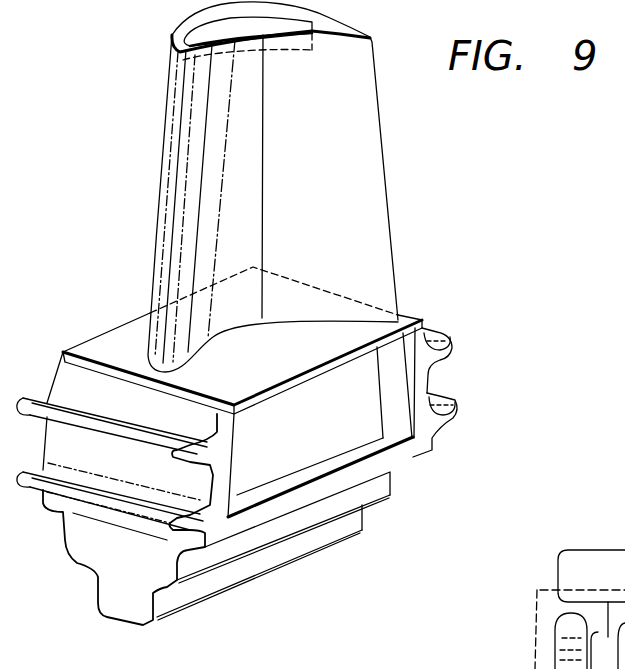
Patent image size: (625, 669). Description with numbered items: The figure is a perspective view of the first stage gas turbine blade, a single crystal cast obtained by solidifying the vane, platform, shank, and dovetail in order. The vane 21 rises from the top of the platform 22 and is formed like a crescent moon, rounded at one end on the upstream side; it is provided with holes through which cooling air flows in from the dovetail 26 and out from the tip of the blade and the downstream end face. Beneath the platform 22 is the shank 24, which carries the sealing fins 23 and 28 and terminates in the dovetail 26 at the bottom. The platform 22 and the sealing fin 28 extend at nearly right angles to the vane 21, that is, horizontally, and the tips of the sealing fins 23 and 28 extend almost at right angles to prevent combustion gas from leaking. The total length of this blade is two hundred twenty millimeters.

The vane 21 is at (383, 153).
The platform 22 is at (128, 332).
The sealing fin 23 is at (452, 347).
The sealing fin 28 is at (455, 417).
The shank 24 is at (357, 437).
The dovetail 26 is at (370, 498).